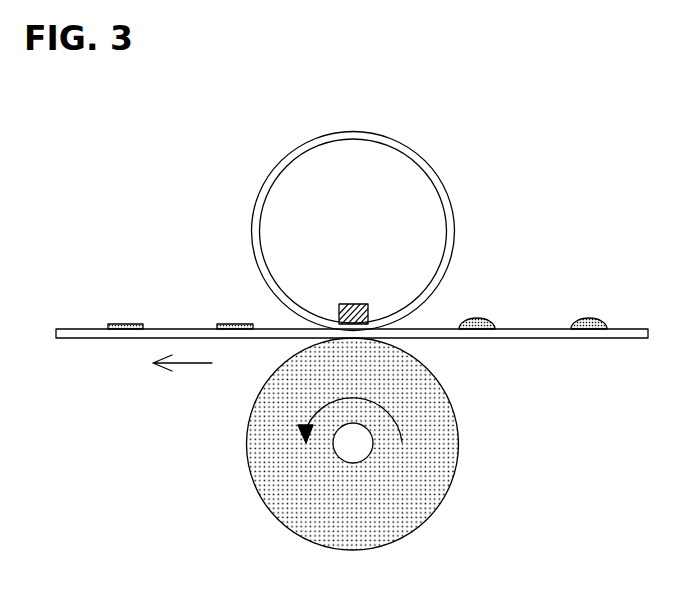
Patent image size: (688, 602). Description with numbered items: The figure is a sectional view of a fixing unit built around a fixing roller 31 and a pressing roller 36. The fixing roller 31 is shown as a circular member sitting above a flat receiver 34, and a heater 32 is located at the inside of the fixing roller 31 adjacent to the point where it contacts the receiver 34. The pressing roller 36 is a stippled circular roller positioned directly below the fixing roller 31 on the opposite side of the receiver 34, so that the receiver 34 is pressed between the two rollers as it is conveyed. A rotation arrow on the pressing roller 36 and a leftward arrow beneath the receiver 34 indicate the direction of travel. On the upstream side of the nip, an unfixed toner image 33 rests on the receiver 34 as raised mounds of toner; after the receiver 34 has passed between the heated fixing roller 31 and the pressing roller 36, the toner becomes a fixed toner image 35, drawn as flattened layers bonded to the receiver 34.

The fixing roller 31 is at (416, 156).
The heater 32 is at (367, 304).
The unfixed toner image 33 is at (593, 320).
The receiver 34 is at (542, 338).
The fixed toner image 35 is at (123, 323).
The pressing roller 36 is at (443, 469).